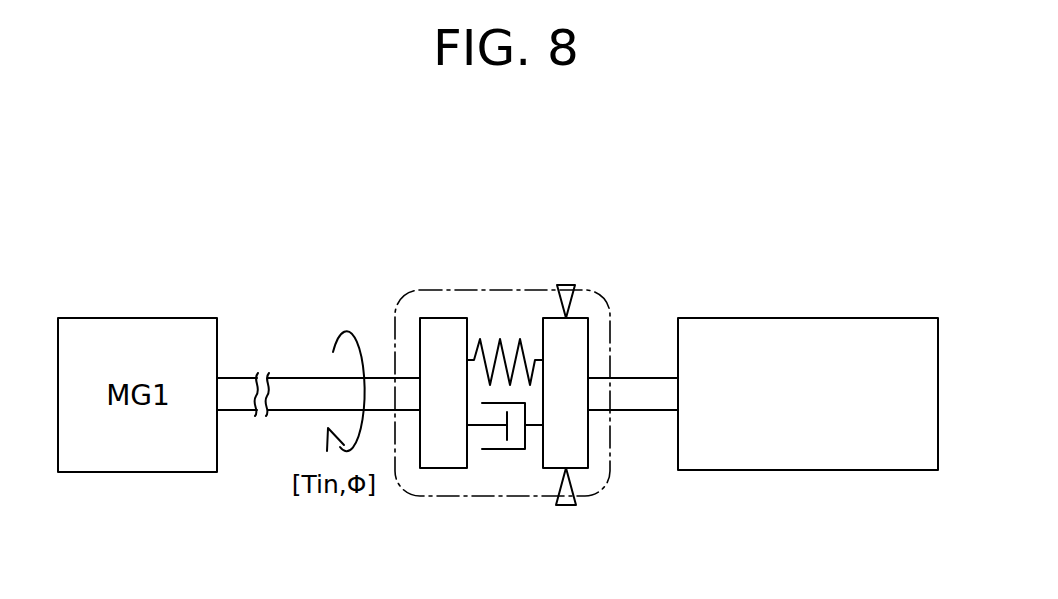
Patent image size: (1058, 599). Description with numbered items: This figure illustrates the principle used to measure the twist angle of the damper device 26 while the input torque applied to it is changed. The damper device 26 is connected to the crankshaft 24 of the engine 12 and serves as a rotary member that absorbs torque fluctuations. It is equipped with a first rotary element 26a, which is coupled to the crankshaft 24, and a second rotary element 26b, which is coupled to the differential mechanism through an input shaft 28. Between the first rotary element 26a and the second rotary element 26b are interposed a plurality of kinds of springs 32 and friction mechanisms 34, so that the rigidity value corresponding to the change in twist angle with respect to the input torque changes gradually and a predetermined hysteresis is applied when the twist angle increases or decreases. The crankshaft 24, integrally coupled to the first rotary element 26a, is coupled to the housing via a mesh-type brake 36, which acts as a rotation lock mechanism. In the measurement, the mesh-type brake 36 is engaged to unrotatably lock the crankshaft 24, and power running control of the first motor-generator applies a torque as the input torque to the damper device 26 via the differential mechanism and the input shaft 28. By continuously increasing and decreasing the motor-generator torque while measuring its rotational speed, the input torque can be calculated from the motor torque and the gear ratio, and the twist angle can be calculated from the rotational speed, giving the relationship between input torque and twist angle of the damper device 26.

The engine 12 is at (805, 318).
The crankshaft 24 is at (644, 390).
The damper device 26 is at (440, 288).
The first rotary element 26a is at (578, 442).
The second rotary element 26b is at (442, 457).
The input shaft 28 is at (286, 388).
The spring 32 is at (503, 339).
The friction mechanism 34 is at (508, 452).
The mesh-type brake 36 is at (564, 292).